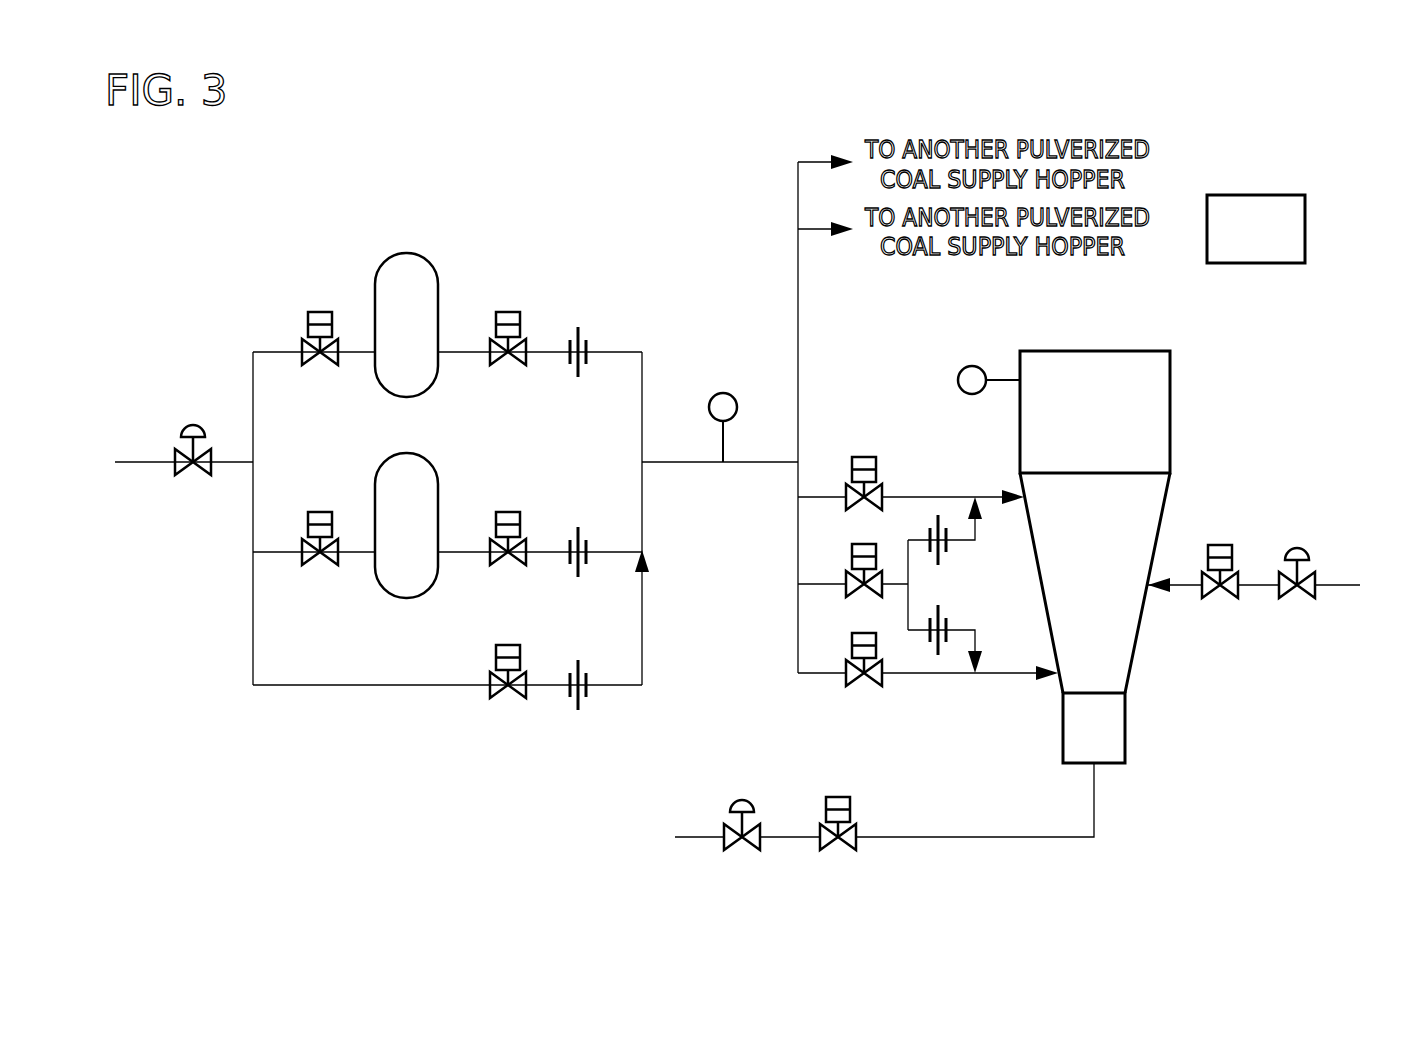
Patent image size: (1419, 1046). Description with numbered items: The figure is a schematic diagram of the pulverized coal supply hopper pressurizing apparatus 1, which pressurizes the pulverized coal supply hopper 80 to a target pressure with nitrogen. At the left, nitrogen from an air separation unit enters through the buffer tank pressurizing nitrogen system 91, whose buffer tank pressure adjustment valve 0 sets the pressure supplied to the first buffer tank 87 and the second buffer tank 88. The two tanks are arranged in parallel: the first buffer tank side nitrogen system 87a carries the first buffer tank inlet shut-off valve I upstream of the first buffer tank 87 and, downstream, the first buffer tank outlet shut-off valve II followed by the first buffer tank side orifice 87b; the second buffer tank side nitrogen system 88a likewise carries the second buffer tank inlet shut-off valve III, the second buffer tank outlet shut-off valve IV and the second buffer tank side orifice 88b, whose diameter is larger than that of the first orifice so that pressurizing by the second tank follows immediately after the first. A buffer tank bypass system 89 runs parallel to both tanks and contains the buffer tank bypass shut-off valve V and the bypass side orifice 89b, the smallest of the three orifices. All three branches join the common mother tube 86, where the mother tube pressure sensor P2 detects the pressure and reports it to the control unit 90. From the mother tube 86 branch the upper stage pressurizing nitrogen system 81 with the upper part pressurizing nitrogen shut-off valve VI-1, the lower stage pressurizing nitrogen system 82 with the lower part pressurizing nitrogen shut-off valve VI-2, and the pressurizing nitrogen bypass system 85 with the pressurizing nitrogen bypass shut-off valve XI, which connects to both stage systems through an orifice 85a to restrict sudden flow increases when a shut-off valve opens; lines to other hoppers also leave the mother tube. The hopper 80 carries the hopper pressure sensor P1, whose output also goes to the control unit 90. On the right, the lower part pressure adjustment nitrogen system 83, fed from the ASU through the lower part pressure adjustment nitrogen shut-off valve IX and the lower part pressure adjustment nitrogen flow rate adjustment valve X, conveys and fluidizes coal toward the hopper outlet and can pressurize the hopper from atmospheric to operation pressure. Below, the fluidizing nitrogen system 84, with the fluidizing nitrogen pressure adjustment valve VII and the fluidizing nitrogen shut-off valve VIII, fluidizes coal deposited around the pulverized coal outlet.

The pulverized coal supply hopper pressurizing apparatus 1 is at (512, 187).
The buffer tank pressure adjustment valve 0 is at (192, 422).
The buffer tank pressurizing nitrogen system 91 is at (140, 459).
The first buffer tank 87 is at (403, 252).
The first buffer tank side nitrogen system 87a is at (272, 350).
The first buffer tank side orifice 87b is at (572, 325).
The second buffer tank 88 is at (430, 454).
The second buffer tank side nitrogen system 88a is at (281, 550).
The second buffer tank side orifice 88b is at (572, 525).
The buffer tank bypass system 89 is at (285, 679).
The bypass side orifice 89b is at (572, 660).
The mother tube 86 is at (672, 458).
The mother tube pressure sensor P2 is at (721, 390).
The hopper pressure sensor P1 is at (970, 365).
The pulverized coal supply hopper 80 is at (1119, 350).
The upper stage pressurizing nitrogen system 81 is at (818, 498).
The pressurizing nitrogen bypass system 85 is at (816, 584).
The orifice 85a is at (933, 517).
The lower stage pressurizing nitrogen system 82 is at (816, 672).
The lower part pressure adjustment nitrogen system 83 is at (1337, 583).
The fluidizing nitrogen system 84 is at (964, 837).
The control unit 90 is at (1305, 227).
The first buffer tank inlet shut-off valve I is at (318, 310).
The first buffer tank outlet shut-off valve II is at (507, 312).
The second buffer tank inlet shut-off valve III is at (318, 510).
The second buffer tank outlet shut-off valve IV is at (507, 507).
The buffer tank bypass shut-off valve V is at (507, 641).
The upper part pressurizing nitrogen shut-off valve VI-1 is at (862, 458).
The lower part pressurizing nitrogen shut-off valve VI-2 is at (882, 686).
The fluidizing nitrogen pressure adjustment valve VII is at (743, 798).
The fluidizing nitrogen shut-off valve VIII is at (838, 796).
The lower part pressure adjustment nitrogen shut-off valve IX is at (1217, 543).
The lower part pressure adjustment nitrogen flow rate adjustment valve X is at (1295, 547).
The pressurizing nitrogen bypass shut-off valve XI is at (878, 556).